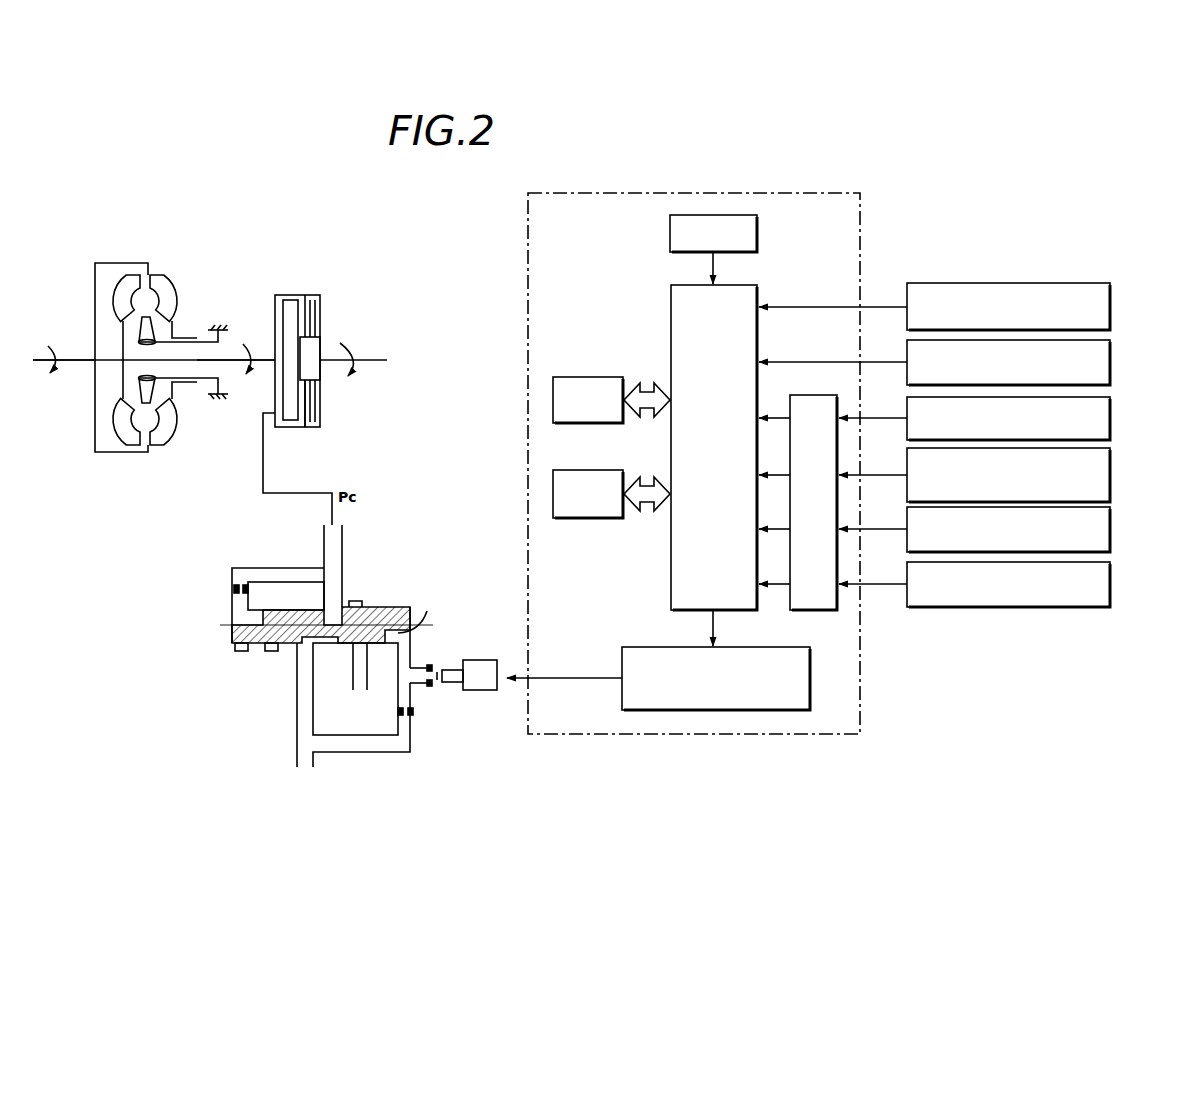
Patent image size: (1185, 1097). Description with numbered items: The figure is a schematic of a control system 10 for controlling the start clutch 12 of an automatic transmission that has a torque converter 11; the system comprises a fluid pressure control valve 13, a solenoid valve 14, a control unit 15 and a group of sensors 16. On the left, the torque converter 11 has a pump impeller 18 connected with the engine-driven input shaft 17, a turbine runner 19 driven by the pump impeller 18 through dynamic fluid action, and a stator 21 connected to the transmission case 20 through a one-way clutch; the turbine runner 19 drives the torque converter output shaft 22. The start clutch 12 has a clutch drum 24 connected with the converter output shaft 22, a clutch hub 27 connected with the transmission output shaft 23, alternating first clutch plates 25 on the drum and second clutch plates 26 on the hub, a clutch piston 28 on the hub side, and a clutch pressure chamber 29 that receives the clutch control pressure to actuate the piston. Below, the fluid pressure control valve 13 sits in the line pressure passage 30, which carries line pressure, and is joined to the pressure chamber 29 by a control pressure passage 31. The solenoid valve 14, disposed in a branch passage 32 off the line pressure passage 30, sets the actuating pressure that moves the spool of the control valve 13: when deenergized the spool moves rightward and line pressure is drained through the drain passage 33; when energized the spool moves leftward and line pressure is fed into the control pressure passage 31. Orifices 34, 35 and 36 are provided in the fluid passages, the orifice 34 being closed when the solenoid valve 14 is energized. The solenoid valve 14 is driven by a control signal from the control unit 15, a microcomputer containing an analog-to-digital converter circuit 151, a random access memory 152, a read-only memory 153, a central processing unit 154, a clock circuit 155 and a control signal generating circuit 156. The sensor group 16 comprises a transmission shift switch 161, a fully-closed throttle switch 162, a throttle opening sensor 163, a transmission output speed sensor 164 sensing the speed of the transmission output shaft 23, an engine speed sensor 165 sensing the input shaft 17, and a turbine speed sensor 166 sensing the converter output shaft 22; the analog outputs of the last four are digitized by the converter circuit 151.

The control system 10 is at (463, 197).
The torque converter 11 is at (126, 256).
The start clutch 12 is at (294, 285).
The fluid pressure control valve 13 is at (384, 601).
The solenoid valve 14 is at (484, 660).
The control unit 15 is at (860, 230).
The group of sensors 16 is at (1013, 276).
The input shaft 17 is at (78, 359).
The pump impeller 18 is at (178, 296).
The turbine runner 19 is at (126, 440).
The transmission case 20 is at (209, 394).
The stator 21 is at (151, 422).
The torque converter output shaft 22 is at (264, 358).
The transmission output shaft 23 is at (331, 358).
The clutch drum 24 is at (320, 298).
The first clutch plates 25 is at (318, 324).
The second clutch plates 26 is at (315, 396).
The clutch hub 27 is at (322, 372).
The clutch piston 28 is at (292, 415).
The clutch pressure chamber 29 is at (276, 398).
The line pressure passage 30 is at (298, 705).
The control pressure passage 31 is at (343, 545).
The branch passage 32 is at (413, 707).
The drain passage 33 is at (353, 658).
The orifice 34 is at (428, 666).
The orifice 35 is at (415, 712).
The orifice 36 is at (233, 590).
The analog-to-digital converter circuit 151 is at (835, 611).
The random access memory 152 is at (570, 377).
The read-only memory 153 is at (576, 518).
The central processing unit 154 is at (671, 298).
The clock circuit 155 is at (670, 244).
The control signal generating circuit 156 is at (631, 647).
The transmission shift switch 161 is at (1114, 297).
The fully-closed throttle switch 162 is at (1114, 354).
The throttle opening sensor 163 is at (1114, 409).
The transmission output speed sensor 164 is at (1114, 465).
The engine speed sensor 165 is at (1114, 519).
The turbine speed sensor 166 is at (1114, 574).